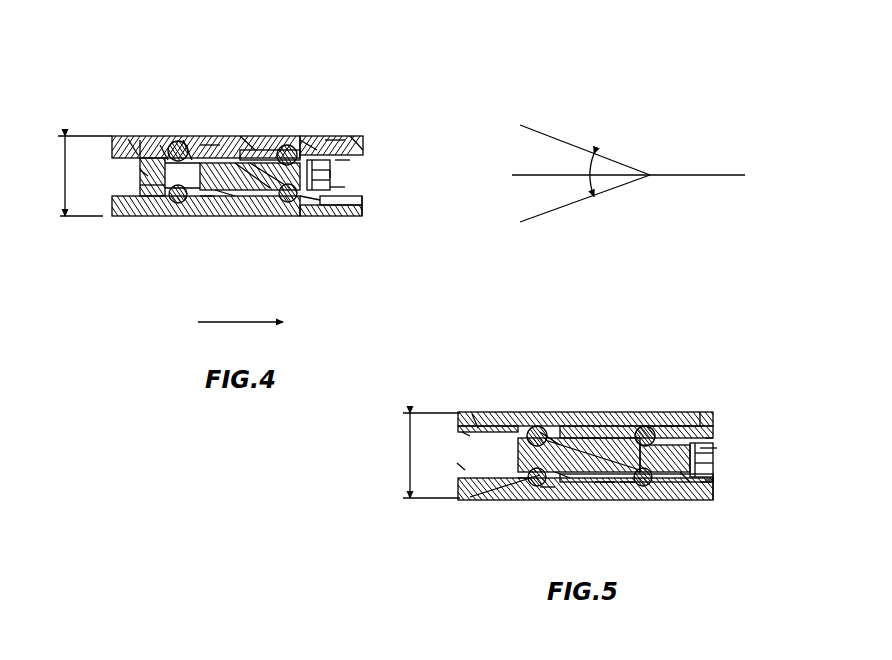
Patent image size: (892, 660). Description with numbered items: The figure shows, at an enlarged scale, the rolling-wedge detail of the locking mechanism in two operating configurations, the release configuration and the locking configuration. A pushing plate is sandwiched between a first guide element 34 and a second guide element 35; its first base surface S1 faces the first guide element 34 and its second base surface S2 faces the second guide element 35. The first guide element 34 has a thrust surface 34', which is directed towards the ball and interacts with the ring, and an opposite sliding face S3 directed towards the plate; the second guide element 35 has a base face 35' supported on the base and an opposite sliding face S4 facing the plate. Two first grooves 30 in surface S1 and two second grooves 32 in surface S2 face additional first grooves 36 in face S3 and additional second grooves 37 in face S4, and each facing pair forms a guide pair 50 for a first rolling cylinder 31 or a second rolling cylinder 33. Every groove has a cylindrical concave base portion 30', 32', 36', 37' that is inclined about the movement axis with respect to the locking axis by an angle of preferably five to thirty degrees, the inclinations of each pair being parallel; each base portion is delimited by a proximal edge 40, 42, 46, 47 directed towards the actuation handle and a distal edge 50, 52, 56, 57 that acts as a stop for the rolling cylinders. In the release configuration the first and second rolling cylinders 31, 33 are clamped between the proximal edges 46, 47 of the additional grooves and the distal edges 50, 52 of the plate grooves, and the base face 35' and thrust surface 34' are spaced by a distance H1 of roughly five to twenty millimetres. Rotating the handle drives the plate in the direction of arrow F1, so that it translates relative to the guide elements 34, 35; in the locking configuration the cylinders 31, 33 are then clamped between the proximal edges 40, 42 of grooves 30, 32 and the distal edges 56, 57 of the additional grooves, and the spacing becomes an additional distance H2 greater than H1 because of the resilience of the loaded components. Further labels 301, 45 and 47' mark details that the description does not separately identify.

In FIG. 4, the first groove 30 is at (267, 112).
In FIG. 5, the first groove 30 is at (746, 517).
In FIG. 4, the base portion of first groove 30' is at (316, 125).
In FIG. 5, the base portion of first groove 30' is at (650, 471).
In FIG. 4, the assembly axis 301 is at (140, 173).
In FIG. 4, the first rolling cylinder 31 is at (184, 138).
In FIG. 5, the first rolling cylinder 31 is at (685, 415).
In FIG. 4, the second groove 32 is at (392, 177).
In FIG. 4, the base portion of second groove 32' is at (264, 118).
In FIG. 5, the base portion of second groove 32' is at (638, 513).
In FIG. 4, the second rolling cylinder 33 is at (188, 210).
In FIG. 5, the second rolling cylinder 33 is at (518, 460).
In FIG. 4, the first guide element 34 is at (212, 122).
In FIG. 5, the first guide element 34 is at (616, 405).
In FIG. 4, the thrust surface 34' is at (117, 120).
In FIG. 5, the thrust surface 34' is at (488, 403).
In FIG. 4, the second guide element 35 is at (203, 247).
In FIG. 4, the base face 35' is at (350, 251).
In FIG. 4, the additional first groove 36 is at (330, 141).
In FIG. 5, the base portion of additional first groove 36' is at (624, 408).
In FIG. 5, the additional second groove 37 is at (568, 412).
In FIG. 5, the base portion of additional second groove 37' is at (539, 521).
In FIG. 4, the proximal edge 40 is at (150, 150).
In FIG. 5, the proximal edge 40 is at (713, 475).
In FIG. 4, the proximal edge 42 is at (152, 198).
In FIG. 5, the proximal edge 42 is at (527, 498).
In FIG. 5, the lower plate edge 45 is at (497, 498).
In FIG. 4, the proximal edge 46 is at (168, 140).
In FIG. 5, the proximal edge 46 is at (528, 432).
In FIG. 4, the proximal edge 47 is at (232, 241).
In FIG. 4, the lower ball portion 47' is at (317, 247).
In FIG. 4, the distal edge 50 is at (207, 138).
In FIG. 5, the distal edge 50 is at (717, 448).
In FIG. 4, the distal edge 52 is at (207, 212).
In FIG. 5, the distal edge 52 is at (603, 497).
In FIG. 4, the distal edge 56 is at (357, 138).
In FIG. 5, the distal edge 56 is at (580, 440).
In FIG. 4, the distal edge 57 is at (218, 210).
In FIG. 5, the distal edge 57 is at (585, 485).
In FIG. 4, the first base surface S1 is at (350, 160).
In FIG. 5, the first base surface S1 is at (713, 440).
In FIG. 4, the second base surface S2 is at (368, 193).
In FIG. 5, the second base surface S2 is at (717, 480).
In FIG. 5, the sliding face S3 is at (468, 435).
In FIG. 5, the sliding face S4 is at (457, 463).
In FIG. 4, the distance H1 is at (60, 170).
In FIG. 5, the additional distance H2 is at (405, 458).
In FIG. 4, the arrow F1 is at (240, 330).